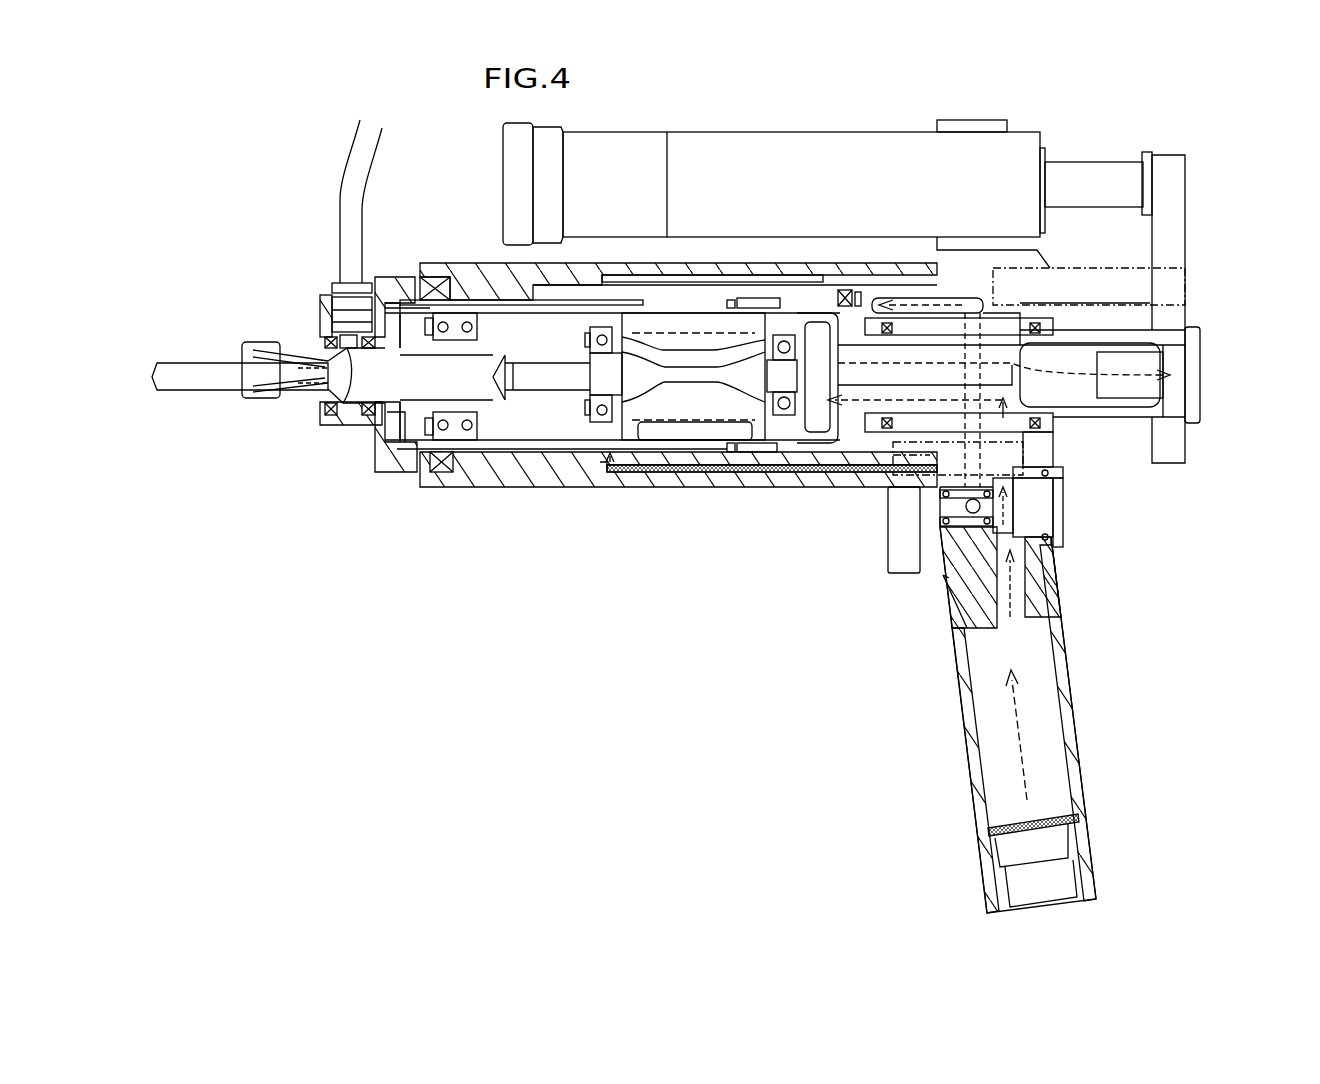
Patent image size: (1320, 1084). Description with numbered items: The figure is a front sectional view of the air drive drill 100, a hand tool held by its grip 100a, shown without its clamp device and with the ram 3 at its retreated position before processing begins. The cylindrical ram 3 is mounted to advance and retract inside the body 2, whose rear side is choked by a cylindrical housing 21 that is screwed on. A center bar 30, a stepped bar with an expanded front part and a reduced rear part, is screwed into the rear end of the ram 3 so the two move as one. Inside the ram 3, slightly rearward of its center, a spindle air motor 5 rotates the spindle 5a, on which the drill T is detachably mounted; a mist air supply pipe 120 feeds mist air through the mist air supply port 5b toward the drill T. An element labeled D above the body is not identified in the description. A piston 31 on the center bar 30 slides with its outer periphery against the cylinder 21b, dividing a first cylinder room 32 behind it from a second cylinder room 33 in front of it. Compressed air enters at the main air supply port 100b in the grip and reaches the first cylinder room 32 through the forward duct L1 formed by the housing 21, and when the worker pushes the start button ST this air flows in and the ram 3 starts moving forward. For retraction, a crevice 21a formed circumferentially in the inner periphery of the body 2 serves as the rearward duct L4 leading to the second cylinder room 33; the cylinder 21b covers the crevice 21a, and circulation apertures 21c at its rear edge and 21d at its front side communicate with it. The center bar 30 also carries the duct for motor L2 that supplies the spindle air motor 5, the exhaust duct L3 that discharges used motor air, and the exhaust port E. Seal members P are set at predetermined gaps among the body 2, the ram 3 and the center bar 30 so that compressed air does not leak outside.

The mist air supply pipe 120 is at (345, 160).
The drill T is at (200, 365).
The body 2 is at (453, 262).
The seal member P is at (433, 283).
The drive unit D is at (735, 148).
The piston 31 is at (820, 288).
The first cylinder room 32 is at (862, 290).
The forward duct L1 is at (920, 300).
The housing 21 is at (977, 257).
The exhaust duct L3 is at (1133, 370).
The exhaust port E is at (1188, 387).
The mist air supply port 5b is at (350, 362).
The spindle 5a is at (392, 475).
The ram 3 is at (530, 452).
The second cylinder room 33 is at (560, 452).
The circulation aperture 21d is at (608, 480).
The crevice 21a is at (672, 474).
The spindle air motor 5 is at (702, 407).
The cylinder 21b is at (747, 477).
The rearward duct L4 is at (790, 458).
The duct for motor L2 is at (827, 463).
The circulation aperture 21c is at (895, 483).
The start button ST is at (887, 545).
The center bar 30 is at (1103, 430).
The air drive drill 100 is at (648, 548).
The grip 100a is at (1078, 703).
The main air supply port 100b is at (1063, 903).